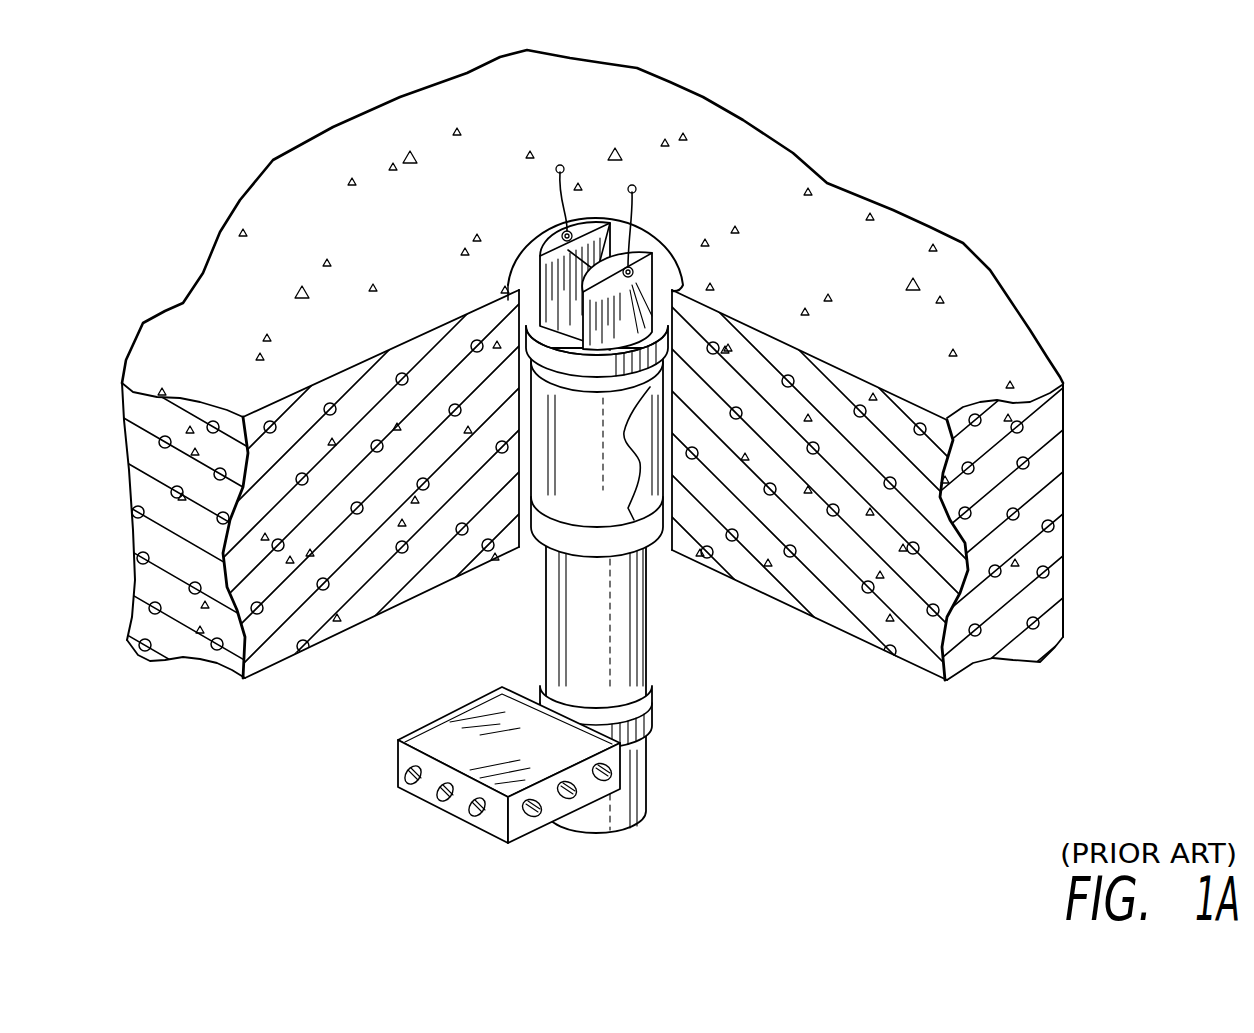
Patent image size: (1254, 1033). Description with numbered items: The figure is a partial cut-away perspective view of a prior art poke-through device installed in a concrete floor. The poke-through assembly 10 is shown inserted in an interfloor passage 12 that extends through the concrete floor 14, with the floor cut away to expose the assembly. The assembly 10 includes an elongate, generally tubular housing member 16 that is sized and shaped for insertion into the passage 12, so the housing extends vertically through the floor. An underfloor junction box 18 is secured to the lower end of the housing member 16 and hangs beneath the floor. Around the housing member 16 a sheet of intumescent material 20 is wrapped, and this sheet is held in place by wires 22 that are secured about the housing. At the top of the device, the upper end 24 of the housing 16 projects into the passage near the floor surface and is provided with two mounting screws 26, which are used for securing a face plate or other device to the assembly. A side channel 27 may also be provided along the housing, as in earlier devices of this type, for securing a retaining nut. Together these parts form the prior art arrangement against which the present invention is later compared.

The poke-through assembly 10 is at (535, 440).
The interfloor passage 12 is at (582, 522).
The concrete floor 14 is at (535, 412).
The housing member 16 is at (648, 653).
The underfloor junction box 18 is at (523, 838).
The intumescent material 20 is at (662, 385).
The wires 22 is at (614, 453).
The upper end 24 is at (663, 227).
The mounting screws 26 is at (565, 166).
The side channel 27 is at (683, 273).